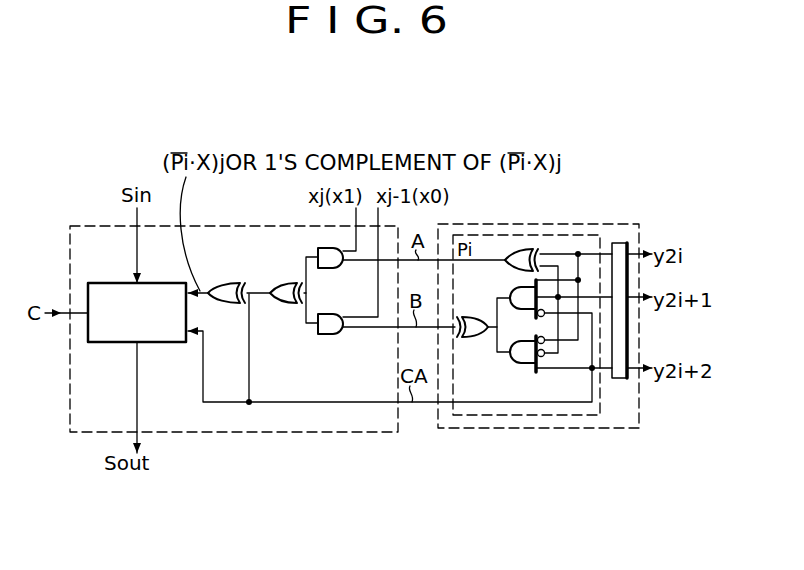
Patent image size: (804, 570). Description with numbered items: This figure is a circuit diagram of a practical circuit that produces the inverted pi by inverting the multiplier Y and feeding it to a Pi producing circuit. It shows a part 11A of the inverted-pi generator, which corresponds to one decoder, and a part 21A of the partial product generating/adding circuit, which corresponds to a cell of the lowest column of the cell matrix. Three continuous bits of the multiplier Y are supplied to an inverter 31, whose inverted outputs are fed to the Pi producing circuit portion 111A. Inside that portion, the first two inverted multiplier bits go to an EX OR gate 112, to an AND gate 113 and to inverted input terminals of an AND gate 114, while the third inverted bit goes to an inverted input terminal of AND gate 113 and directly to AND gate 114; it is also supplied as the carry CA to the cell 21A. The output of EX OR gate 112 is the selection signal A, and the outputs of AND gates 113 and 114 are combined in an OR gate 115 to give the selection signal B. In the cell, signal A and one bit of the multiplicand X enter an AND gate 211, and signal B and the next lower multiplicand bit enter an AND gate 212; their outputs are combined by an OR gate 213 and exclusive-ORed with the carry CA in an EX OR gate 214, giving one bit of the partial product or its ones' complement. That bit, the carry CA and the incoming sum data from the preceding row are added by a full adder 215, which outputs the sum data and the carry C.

The part of the partial product generating/adding circuit 21A is at (218, 226).
The full adder 215 is at (112, 283).
The EX OR gate 214 is at (226, 283).
The OR gate 213 is at (280, 303).
The AND gate 211 is at (338, 268).
The AND gate 212 is at (328, 334).
The part of the pi-bar generator 11A is at (470, 224).
The pi producing circuit portion 111A is at (590, 235).
The EX OR gate 112 is at (527, 248).
The AND gate 113 is at (508, 290).
The AND gate 114 is at (522, 364).
The OR gate 115 is at (470, 337).
The inverter 31 is at (627, 226).